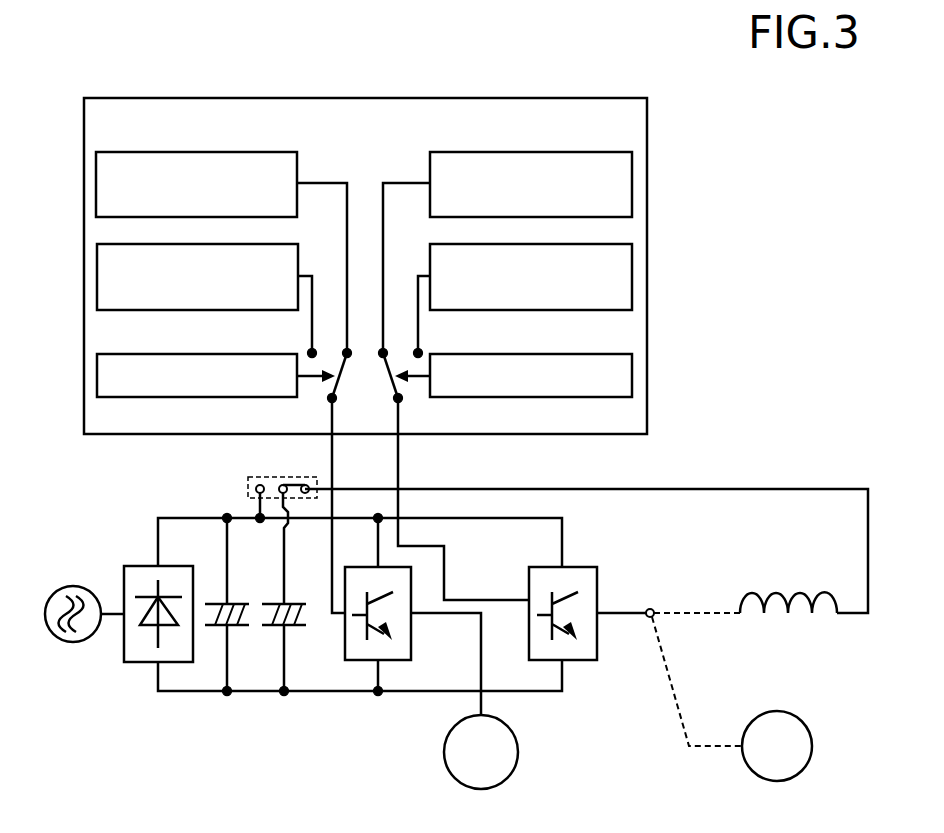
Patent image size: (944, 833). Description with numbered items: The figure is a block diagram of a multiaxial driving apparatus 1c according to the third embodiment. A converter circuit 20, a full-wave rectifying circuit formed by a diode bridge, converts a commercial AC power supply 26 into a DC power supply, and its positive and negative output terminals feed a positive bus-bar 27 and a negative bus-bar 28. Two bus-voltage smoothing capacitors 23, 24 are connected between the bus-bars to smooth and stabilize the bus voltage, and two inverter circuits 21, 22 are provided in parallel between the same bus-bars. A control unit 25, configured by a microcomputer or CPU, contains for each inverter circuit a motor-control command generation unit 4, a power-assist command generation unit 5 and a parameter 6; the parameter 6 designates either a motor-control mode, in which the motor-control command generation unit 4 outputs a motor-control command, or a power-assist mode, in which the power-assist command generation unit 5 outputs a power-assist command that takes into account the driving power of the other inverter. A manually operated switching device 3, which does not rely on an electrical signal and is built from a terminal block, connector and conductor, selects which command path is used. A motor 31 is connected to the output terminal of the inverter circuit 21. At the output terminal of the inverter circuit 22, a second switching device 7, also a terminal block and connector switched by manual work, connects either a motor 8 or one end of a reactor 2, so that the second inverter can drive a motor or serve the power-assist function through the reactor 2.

The multiaxial driving apparatus 1c is at (390, 82).
The control unit 25 is at (583, 98).
The motor-control command generation unit 4 is at (96, 183).
The power-assist command generation unit 5 is at (96, 276).
The parameter 6 is at (96, 376).
The switching device 3 is at (247, 486).
The positive bus-bar 27 is at (178, 514).
The negative bus-bar 28 is at (172, 695).
The commercial AC power supply 26 is at (72, 586).
The converter circuit 20 is at (135, 565).
The bus-voltage smoothing capacitor 23 is at (213, 602).
The bus-voltage smoothing capacitor 24 is at (268, 602).
The inverter circuit 21 is at (345, 655).
The inverter circuit 22 is at (588, 566).
The switching device 7 is at (652, 607).
The reactor 2 is at (826, 592).
The motor 8 is at (777, 712).
The motor 31 is at (444, 750).